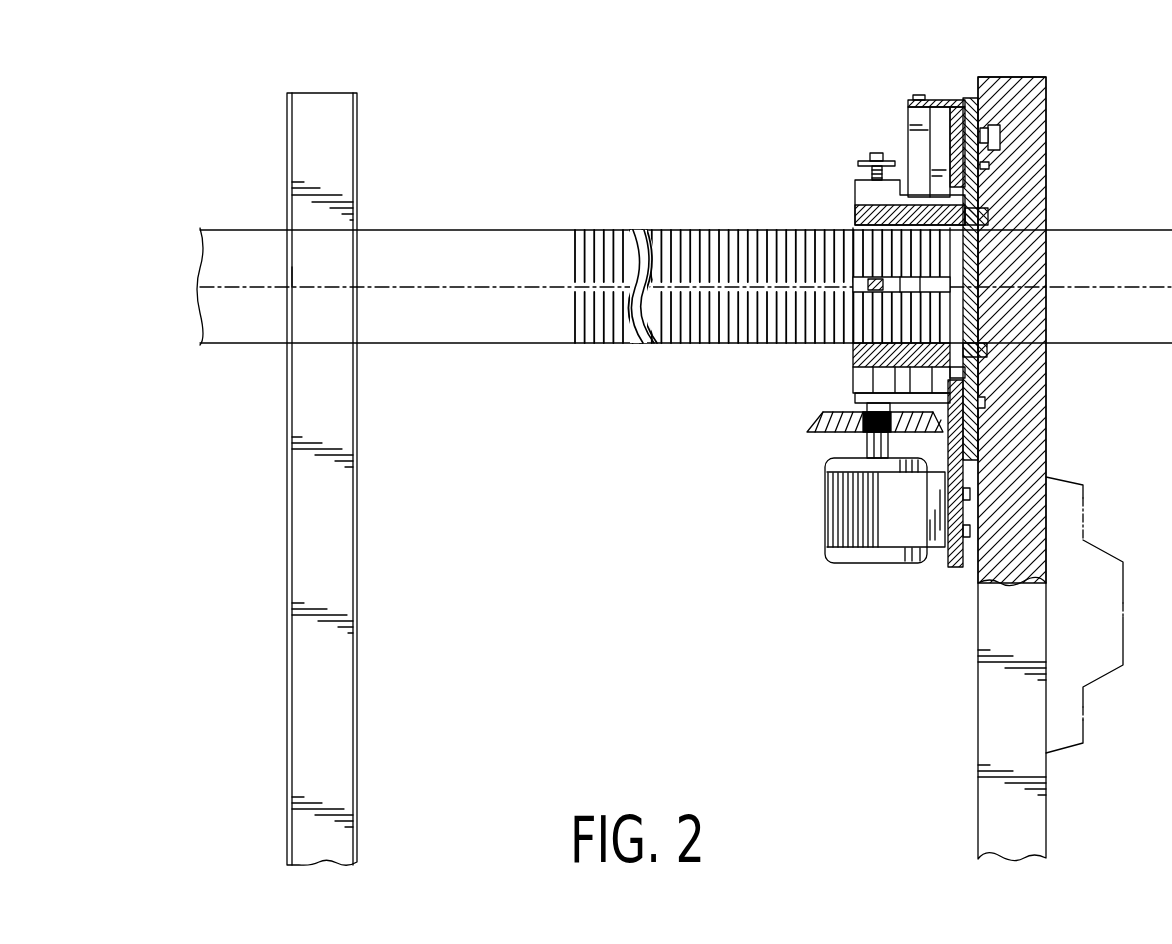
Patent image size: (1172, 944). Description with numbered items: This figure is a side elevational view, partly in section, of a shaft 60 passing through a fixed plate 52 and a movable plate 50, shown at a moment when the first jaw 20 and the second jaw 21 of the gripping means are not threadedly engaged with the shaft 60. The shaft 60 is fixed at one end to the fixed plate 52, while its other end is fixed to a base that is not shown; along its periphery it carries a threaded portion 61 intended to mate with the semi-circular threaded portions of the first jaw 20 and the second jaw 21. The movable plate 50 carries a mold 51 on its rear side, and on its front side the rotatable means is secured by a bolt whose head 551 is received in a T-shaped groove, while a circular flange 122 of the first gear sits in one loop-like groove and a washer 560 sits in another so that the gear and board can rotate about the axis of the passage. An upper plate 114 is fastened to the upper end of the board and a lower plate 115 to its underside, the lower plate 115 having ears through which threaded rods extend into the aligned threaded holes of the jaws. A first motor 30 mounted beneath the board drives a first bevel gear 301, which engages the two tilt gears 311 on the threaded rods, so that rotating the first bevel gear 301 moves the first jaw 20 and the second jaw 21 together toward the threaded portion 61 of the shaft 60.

The first jaw 20 is at (855, 192).
The second jaw 21 is at (855, 380).
The first motor 30 is at (828, 520).
The movable plate 50 is at (1046, 78).
The mold 51 is at (1105, 565).
The fixed plate 52 is at (302, 158).
The shaft 60 is at (483, 240).
The threaded portion 61 is at (693, 245).
The upper plate 114 is at (937, 105).
The lower plate 115 is at (855, 400).
The circular flange 122 is at (990, 165).
The first bevel gear 301 is at (812, 422).
The tilt gears 311 is at (850, 432).
The head 551 is at (993, 125).
The washer 560 is at (985, 215).